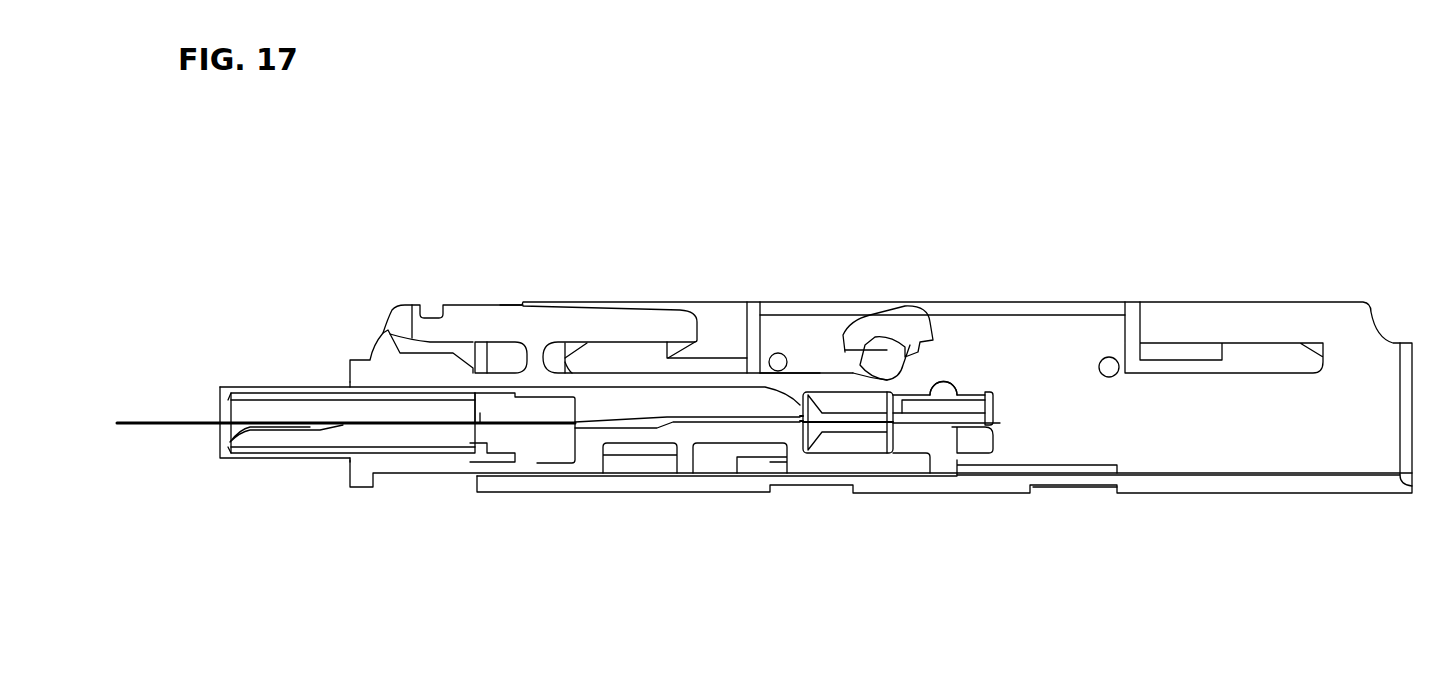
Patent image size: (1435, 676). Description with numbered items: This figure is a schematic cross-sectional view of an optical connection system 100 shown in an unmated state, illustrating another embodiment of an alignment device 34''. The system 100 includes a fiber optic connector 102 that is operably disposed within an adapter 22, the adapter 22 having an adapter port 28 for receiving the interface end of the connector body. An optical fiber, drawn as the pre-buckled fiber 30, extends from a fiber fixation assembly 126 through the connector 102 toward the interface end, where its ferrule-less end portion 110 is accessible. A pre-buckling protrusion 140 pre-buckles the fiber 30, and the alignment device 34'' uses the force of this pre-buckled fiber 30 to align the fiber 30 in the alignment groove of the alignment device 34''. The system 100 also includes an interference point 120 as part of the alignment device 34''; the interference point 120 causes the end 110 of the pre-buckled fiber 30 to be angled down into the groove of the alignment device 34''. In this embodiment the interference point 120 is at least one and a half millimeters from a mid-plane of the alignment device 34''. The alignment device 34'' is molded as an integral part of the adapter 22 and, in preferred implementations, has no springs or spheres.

The connector system 100 is at (1110, 243).
The adapter 22 is at (578, 303).
The pre-buckled fiber 30 is at (700, 415).
The fiber optic connector 102 is at (750, 382).
The interference point 120 is at (903, 423).
The alignment device 34'' is at (979, 374).
The fiber fixation assembly 126 is at (543, 458).
The pre-buckling protrusion 140 is at (670, 422).
The end portion of the optical fiber 110 is at (950, 427).
The adapter port 28 is at (1273, 475).